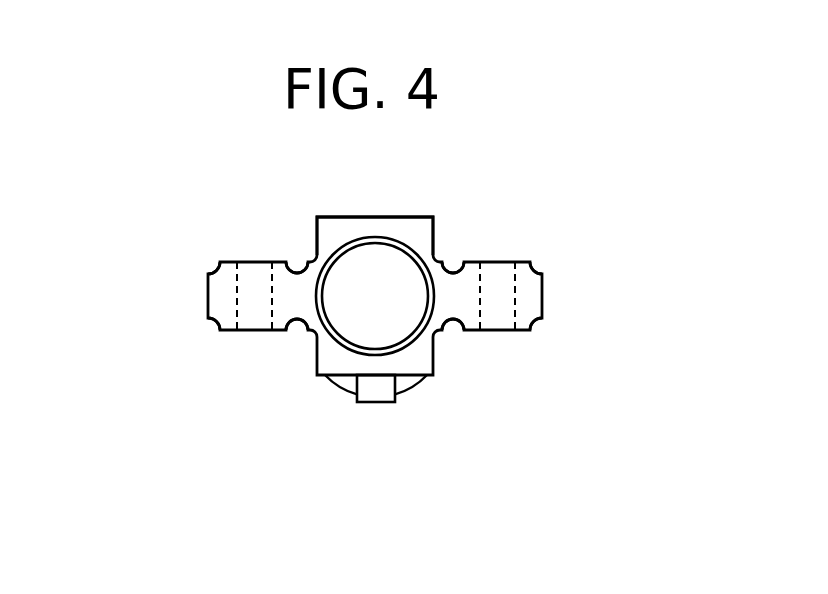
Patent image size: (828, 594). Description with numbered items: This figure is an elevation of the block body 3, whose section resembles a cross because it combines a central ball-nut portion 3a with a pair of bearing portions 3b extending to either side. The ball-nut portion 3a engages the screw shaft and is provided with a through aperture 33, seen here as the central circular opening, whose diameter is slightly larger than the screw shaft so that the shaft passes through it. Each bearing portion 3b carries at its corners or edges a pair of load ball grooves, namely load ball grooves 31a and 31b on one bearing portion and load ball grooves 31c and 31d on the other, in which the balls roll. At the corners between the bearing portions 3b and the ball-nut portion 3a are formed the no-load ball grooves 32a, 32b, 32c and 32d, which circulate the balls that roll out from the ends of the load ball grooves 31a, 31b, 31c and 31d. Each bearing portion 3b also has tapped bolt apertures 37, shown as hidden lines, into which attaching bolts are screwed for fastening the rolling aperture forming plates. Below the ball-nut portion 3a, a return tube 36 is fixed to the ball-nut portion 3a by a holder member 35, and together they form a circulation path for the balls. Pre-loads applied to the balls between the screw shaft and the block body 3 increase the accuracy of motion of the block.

The block body 3 is at (437, 220).
The ball-nut portion 3a is at (333, 232).
The bearing portions 3b is at (207, 300).
The load ball groove 31a is at (208, 262).
The load ball groove 31b is at (209, 325).
The load ball groove 31c is at (541, 322).
The load ball groove 31d is at (543, 265).
The no-load ball groove 32a is at (298, 262).
The no-load ball groove 32b is at (298, 322).
The no-load ball groove 32c is at (451, 322).
The no-load ball groove 32d is at (453, 264).
The through aperture 33 is at (405, 258).
The holder member 35 is at (370, 398).
The return tube 36 is at (410, 388).
The tapped bolt apertures 37 is at (238, 266).